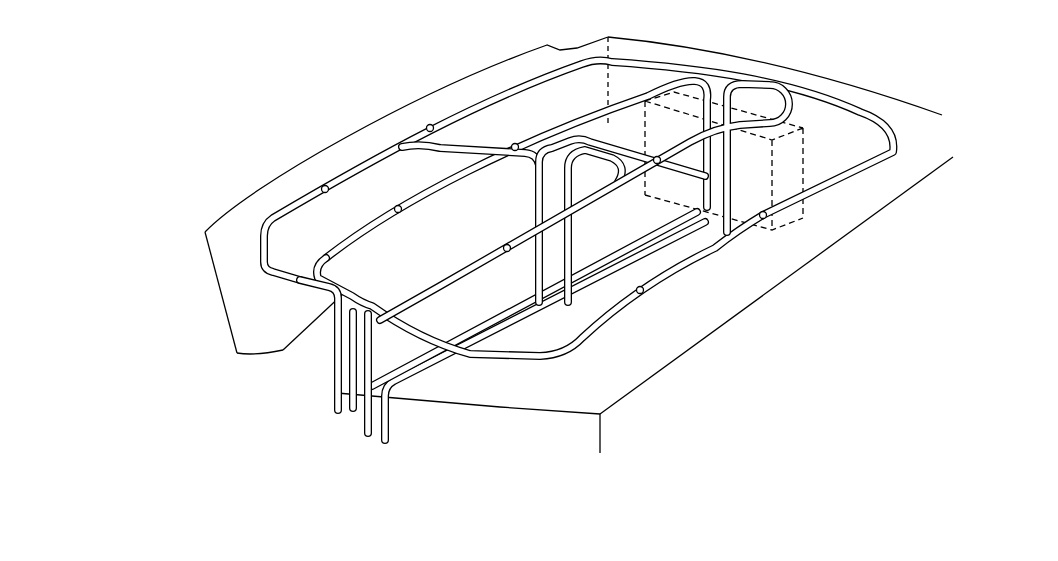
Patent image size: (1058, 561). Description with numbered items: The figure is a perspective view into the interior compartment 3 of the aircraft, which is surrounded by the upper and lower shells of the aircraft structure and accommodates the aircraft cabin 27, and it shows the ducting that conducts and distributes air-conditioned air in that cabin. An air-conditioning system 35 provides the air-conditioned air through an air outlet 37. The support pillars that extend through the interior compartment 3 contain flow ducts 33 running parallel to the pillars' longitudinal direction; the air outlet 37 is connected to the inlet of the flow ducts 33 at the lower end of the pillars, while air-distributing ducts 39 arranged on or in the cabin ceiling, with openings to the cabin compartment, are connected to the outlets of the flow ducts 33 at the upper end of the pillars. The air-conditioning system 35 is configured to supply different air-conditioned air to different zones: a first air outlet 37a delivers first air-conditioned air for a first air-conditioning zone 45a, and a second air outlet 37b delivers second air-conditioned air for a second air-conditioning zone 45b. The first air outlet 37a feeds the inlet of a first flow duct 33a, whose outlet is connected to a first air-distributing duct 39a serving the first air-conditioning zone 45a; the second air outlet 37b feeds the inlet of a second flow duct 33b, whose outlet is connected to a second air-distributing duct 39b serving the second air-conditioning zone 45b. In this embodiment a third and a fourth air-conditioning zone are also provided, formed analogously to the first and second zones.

The interior compartment 3 is at (579, 277).
The aircraft cabin 27 is at (572, 402).
The air-conditioning system 35 is at (502, 301).
The flow ducts 33 is at (496, 258).
The first flow duct 33a is at (341, 357).
The second flow duct 33b is at (363, 328).
The air outlet 37 is at (502, 364).
The first air outlet 37a is at (340, 410).
The second air outlet 37b is at (367, 434).
The air-distributing ducts 39 is at (502, 266).
The first air-distributing duct 39a is at (487, 277).
The second air-distributing duct 39b is at (502, 208).
The first air-conditioning zone 45a is at (447, 186).
The second air-conditioning zone 45b is at (265, 241).